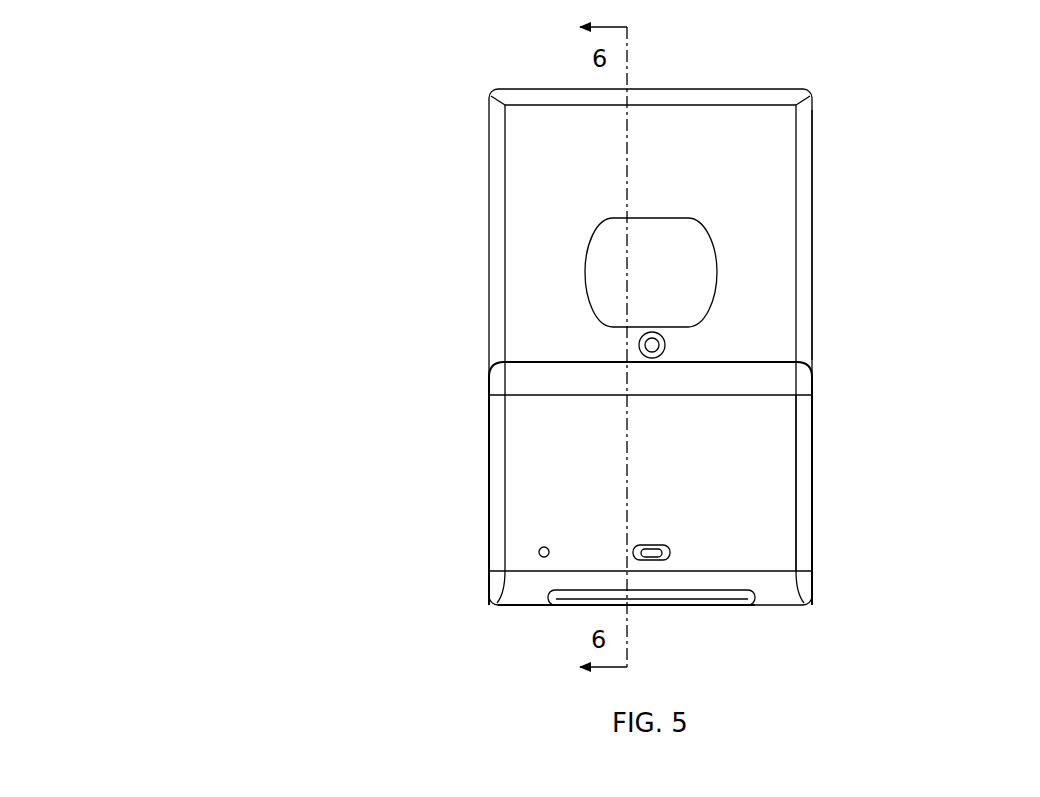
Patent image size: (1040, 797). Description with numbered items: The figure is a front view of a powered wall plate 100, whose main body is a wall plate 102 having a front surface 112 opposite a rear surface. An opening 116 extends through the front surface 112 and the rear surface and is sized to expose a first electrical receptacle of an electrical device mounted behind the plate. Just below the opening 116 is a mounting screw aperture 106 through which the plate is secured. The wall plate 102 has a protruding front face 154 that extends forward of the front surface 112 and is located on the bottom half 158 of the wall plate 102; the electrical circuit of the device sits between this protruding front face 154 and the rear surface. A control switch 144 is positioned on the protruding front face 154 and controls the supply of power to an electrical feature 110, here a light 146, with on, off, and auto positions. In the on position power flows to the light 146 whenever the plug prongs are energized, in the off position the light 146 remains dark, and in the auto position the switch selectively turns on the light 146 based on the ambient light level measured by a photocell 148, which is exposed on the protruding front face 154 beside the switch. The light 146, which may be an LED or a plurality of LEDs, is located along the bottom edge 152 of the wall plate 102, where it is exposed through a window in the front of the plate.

The powered wall plate 100 is at (383, 235).
The wall plate 102 is at (745, 148).
The mounting screw aperture 106 is at (640, 345).
The electrical feature 110 is at (660, 604).
The front surface 112 is at (777, 308).
The opening 116 is at (680, 265).
The control switch 144 is at (632, 548).
The light 146 is at (735, 590).
The photocell 148 is at (539, 552).
The bottom edge 152 is at (525, 605).
The protruding front face 154 is at (697, 452).
The bottom half 158 is at (803, 481).